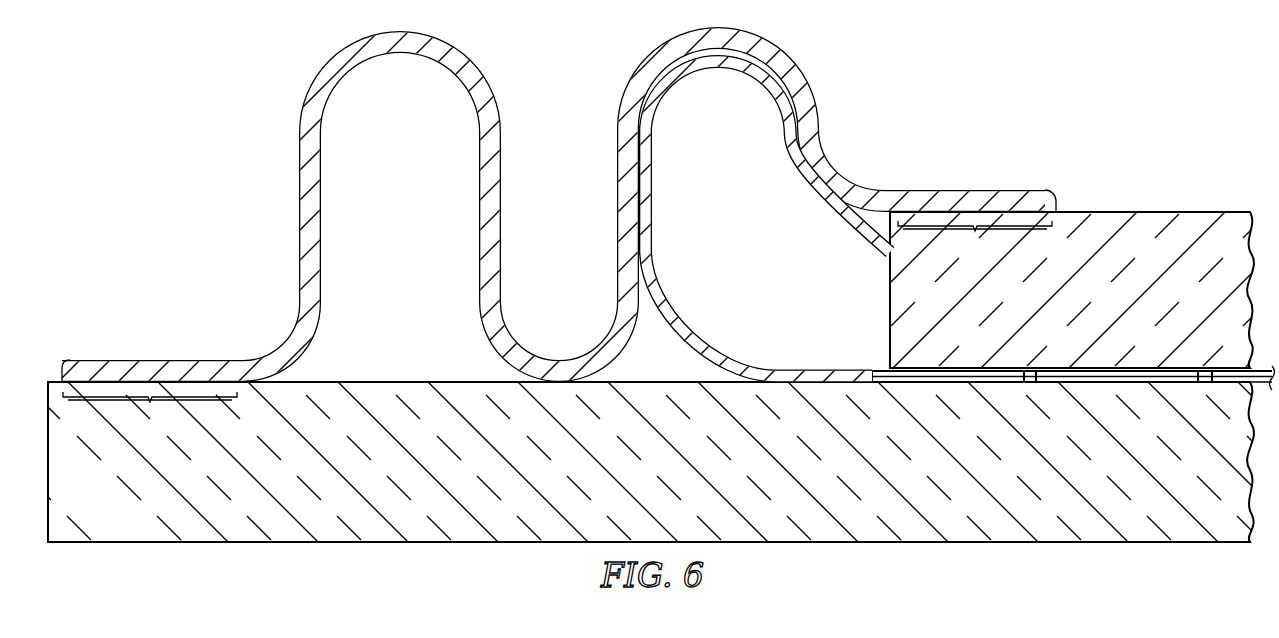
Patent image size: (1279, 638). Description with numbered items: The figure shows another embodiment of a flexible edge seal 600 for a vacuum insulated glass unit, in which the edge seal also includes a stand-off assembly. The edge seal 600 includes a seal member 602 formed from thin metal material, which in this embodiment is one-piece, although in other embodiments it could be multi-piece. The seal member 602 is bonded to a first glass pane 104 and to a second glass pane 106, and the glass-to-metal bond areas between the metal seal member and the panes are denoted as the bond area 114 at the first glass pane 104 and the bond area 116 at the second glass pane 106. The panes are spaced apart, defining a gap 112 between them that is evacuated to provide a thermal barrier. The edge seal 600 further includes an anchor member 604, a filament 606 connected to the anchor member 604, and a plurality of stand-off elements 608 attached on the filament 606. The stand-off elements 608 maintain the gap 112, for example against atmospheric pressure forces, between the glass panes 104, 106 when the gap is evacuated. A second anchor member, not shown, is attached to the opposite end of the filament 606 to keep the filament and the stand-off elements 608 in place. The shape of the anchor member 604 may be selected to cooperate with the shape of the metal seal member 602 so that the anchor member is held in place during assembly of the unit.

The edge seal 600 is at (639, 217).
The seal member 602 is at (832, 155).
The anchor member 604 is at (792, 148).
The first glass pane 104 is at (1153, 218).
The second glass pane 106 is at (1053, 531).
The gap 112 is at (880, 370).
The glass-to-metal bond area 114 is at (975, 241).
The glass-to-metal bond area 116 is at (150, 413).
The filament 606 is at (954, 384).
The stand-off elements 608 is at (1031, 384).